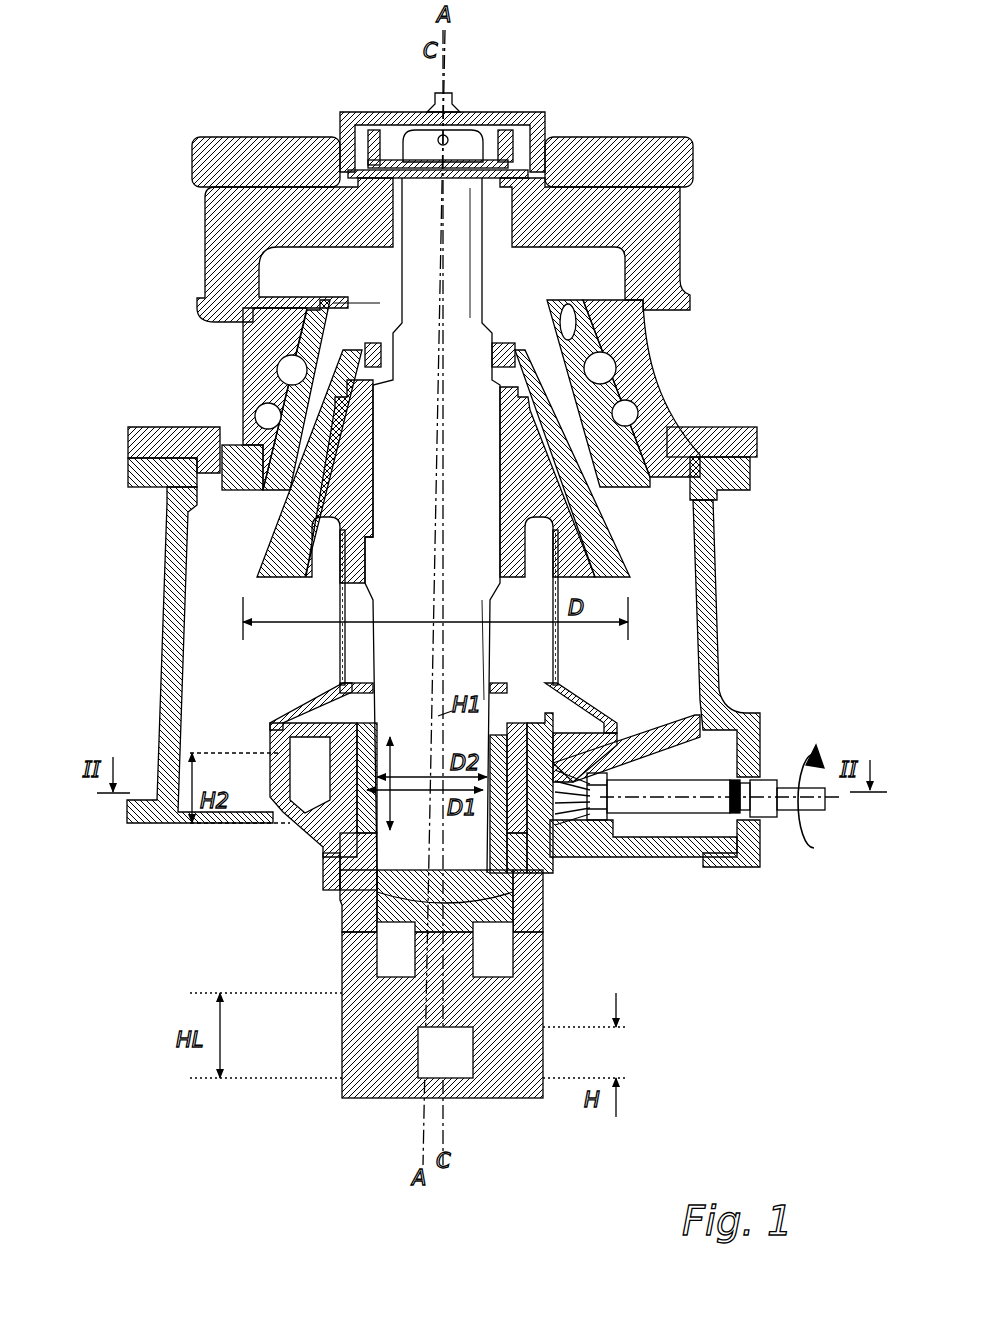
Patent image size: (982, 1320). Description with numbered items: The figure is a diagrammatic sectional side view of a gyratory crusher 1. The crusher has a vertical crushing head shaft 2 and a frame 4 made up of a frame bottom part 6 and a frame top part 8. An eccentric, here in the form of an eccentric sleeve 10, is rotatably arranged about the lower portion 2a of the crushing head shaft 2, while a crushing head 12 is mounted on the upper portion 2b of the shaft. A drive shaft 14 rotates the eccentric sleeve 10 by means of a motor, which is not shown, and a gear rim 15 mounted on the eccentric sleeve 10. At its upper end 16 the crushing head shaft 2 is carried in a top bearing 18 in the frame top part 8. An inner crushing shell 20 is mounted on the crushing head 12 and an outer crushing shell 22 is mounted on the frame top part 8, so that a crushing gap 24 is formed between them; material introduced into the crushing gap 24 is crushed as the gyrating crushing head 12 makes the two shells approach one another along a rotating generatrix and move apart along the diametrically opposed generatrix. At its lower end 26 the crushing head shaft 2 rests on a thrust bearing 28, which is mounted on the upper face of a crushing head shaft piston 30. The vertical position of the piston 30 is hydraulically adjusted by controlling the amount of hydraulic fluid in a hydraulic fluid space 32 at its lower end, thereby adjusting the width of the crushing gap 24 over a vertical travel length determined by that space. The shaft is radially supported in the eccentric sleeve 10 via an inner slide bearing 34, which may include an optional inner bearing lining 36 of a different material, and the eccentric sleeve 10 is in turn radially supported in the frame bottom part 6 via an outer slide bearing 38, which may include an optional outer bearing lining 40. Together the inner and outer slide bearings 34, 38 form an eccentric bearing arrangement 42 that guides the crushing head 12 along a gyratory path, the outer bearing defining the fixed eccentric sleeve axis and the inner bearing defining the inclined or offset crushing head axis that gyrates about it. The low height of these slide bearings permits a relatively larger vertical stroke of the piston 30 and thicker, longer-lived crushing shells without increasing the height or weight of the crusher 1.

The gyratory crusher 1 is at (188, 99).
The crushing head shaft 2 is at (453, 467).
The lower portion of the crushing head shaft 2a is at (361, 777).
The upper portion of the crushing head shaft 2b is at (487, 437).
The frame 4 is at (126, 458).
The frame bottom part 6 is at (167, 735).
The frame top part 8 is at (157, 440).
The eccentric sleeve 10 is at (323, 820).
The crushing head 12 is at (252, 548).
The drive shaft 14 is at (680, 807).
The gear rim 15 is at (757, 727).
The upper end of the crushing head shaft 16 is at (458, 266).
The top bearing 18 is at (545, 168).
The inner crushing shell 20 is at (250, 462).
The outer crushing shell 22 is at (282, 478).
The crushing gap 24 is at (300, 410).
The lower end of the crushing head shaft 26 is at (543, 903).
The thrust bearing 28 is at (543, 915).
The crushing head shaft piston 30 is at (427, 940).
The hydraulic fluid space 32 is at (433, 1067).
The inner slide bearing 34 is at (345, 705).
The inner bearing lining 36 is at (513, 720).
The outer slide bearing 38 is at (340, 830).
The outer bearing lining 40 is at (540, 807).
The eccentric bearing arrangement 42 is at (590, 832).